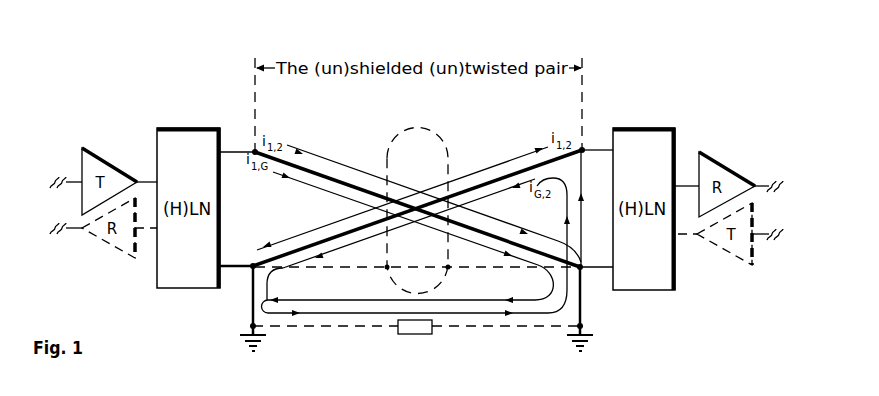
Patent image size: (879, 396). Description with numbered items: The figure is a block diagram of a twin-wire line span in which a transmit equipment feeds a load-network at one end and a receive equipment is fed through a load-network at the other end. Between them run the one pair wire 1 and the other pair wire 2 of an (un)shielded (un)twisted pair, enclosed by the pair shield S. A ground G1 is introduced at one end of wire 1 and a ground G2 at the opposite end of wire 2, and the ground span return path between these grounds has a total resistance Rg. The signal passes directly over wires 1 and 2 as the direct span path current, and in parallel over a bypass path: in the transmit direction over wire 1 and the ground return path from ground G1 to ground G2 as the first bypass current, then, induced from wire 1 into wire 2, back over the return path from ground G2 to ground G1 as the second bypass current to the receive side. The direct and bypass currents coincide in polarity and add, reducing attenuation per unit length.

The one pair wire 1 is at (239, 143).
The other pair wire 2 is at (238, 258).
The pair shield S is at (417, 210).
The total resistance of the ground span return path Rg is at (416, 341).
The ground of the one pair wire G1 is at (587, 309).
The ground of the other pair wire G2 is at (244, 308).